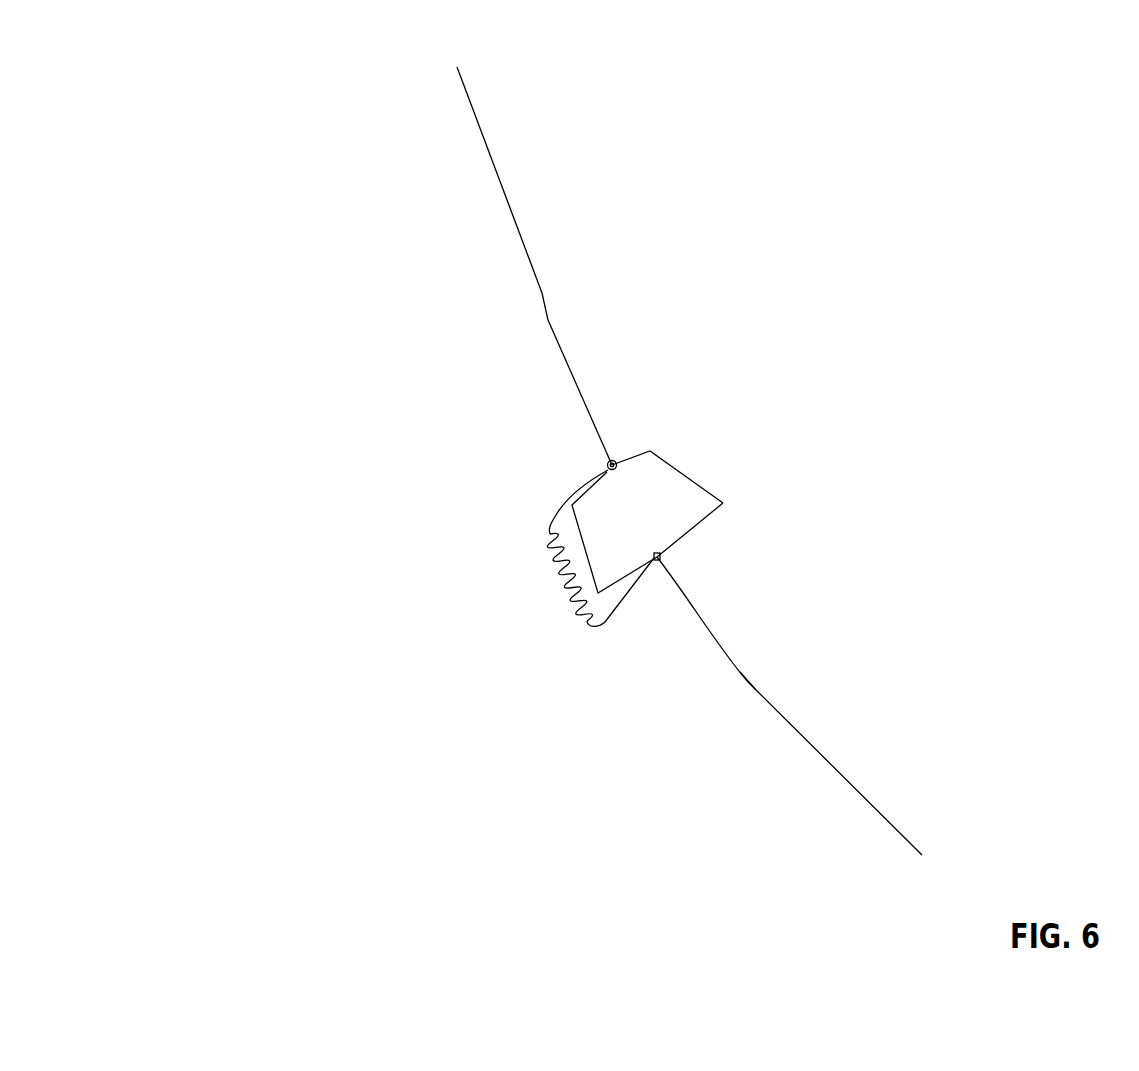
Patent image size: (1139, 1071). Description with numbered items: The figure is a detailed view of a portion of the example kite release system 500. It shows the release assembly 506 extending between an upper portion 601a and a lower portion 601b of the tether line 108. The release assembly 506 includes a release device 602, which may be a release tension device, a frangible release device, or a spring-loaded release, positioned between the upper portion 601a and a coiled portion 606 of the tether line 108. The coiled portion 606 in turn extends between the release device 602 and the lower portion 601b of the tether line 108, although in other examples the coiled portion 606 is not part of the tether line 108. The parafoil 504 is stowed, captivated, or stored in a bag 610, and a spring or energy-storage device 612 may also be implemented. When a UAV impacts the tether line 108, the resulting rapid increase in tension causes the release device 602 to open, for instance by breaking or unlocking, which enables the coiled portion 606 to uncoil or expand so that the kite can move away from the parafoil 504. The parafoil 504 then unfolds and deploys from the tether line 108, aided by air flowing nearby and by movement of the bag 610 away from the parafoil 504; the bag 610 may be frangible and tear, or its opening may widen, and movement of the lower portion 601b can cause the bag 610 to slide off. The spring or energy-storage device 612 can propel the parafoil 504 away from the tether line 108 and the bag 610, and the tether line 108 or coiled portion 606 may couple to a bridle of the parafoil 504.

The kite release system 500 is at (292, 82).
The release assembly 506 is at (365, 290).
The tether line 108 is at (515, 222).
The upper portion 601a is at (548, 320).
The lower portion 601b is at (748, 682).
The release device 602 is at (612, 459).
The parafoil 504 is at (657, 524).
The bag 610 is at (693, 500).
The spring or energy-storage device 612 is at (660, 556).
The coiled portion 606 is at (567, 590).